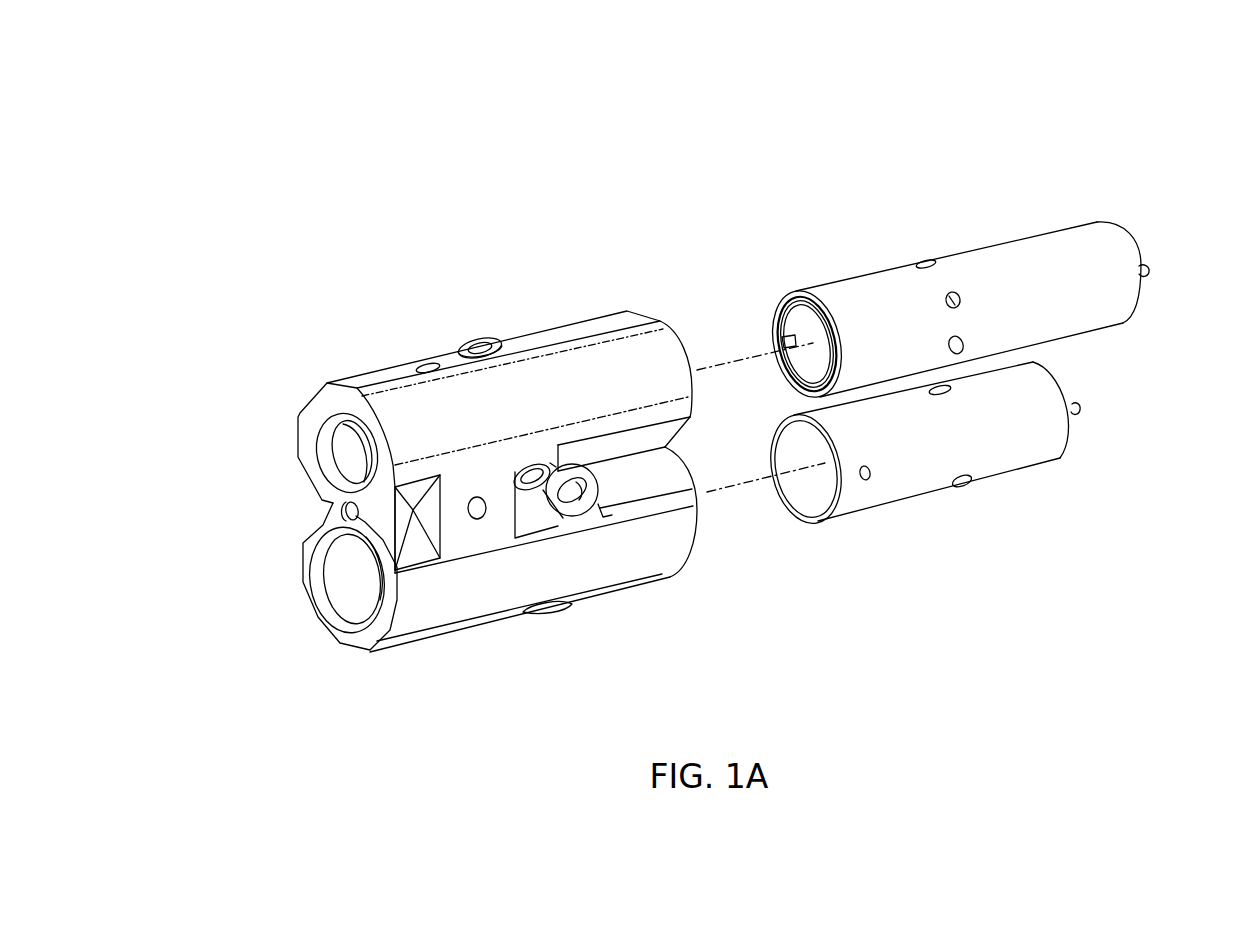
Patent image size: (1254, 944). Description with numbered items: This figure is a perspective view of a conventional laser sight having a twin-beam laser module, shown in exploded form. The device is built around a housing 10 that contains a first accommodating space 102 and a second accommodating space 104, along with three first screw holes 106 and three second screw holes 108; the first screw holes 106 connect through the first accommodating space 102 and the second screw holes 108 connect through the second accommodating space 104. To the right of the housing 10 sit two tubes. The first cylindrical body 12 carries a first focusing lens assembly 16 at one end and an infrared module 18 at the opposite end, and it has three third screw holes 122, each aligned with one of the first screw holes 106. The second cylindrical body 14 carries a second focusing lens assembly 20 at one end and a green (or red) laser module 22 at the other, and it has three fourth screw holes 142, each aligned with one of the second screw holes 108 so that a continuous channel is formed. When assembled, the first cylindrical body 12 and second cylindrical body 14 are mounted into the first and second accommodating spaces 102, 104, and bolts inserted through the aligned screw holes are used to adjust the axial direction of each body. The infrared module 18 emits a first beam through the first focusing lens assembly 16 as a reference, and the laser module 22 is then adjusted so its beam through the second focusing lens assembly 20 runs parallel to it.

The housing 10 is at (365, 373).
The first accommodating space 102 is at (343, 587).
The second accommodating space 104 is at (347, 443).
The first screw holes 106 is at (580, 505).
The second screw holes 108 is at (480, 342).
The first cylindrical body 12 is at (1028, 466).
The third screw holes 122 is at (962, 488).
The second cylindrical body 14 is at (978, 248).
The fourth screw holes 142 is at (922, 263).
The first focusing lens assembly 16 is at (816, 492).
The infrared module 18 is at (1080, 413).
The second focusing lens assembly 20 is at (797, 318).
The green (or red) laser module 22 is at (1138, 257).